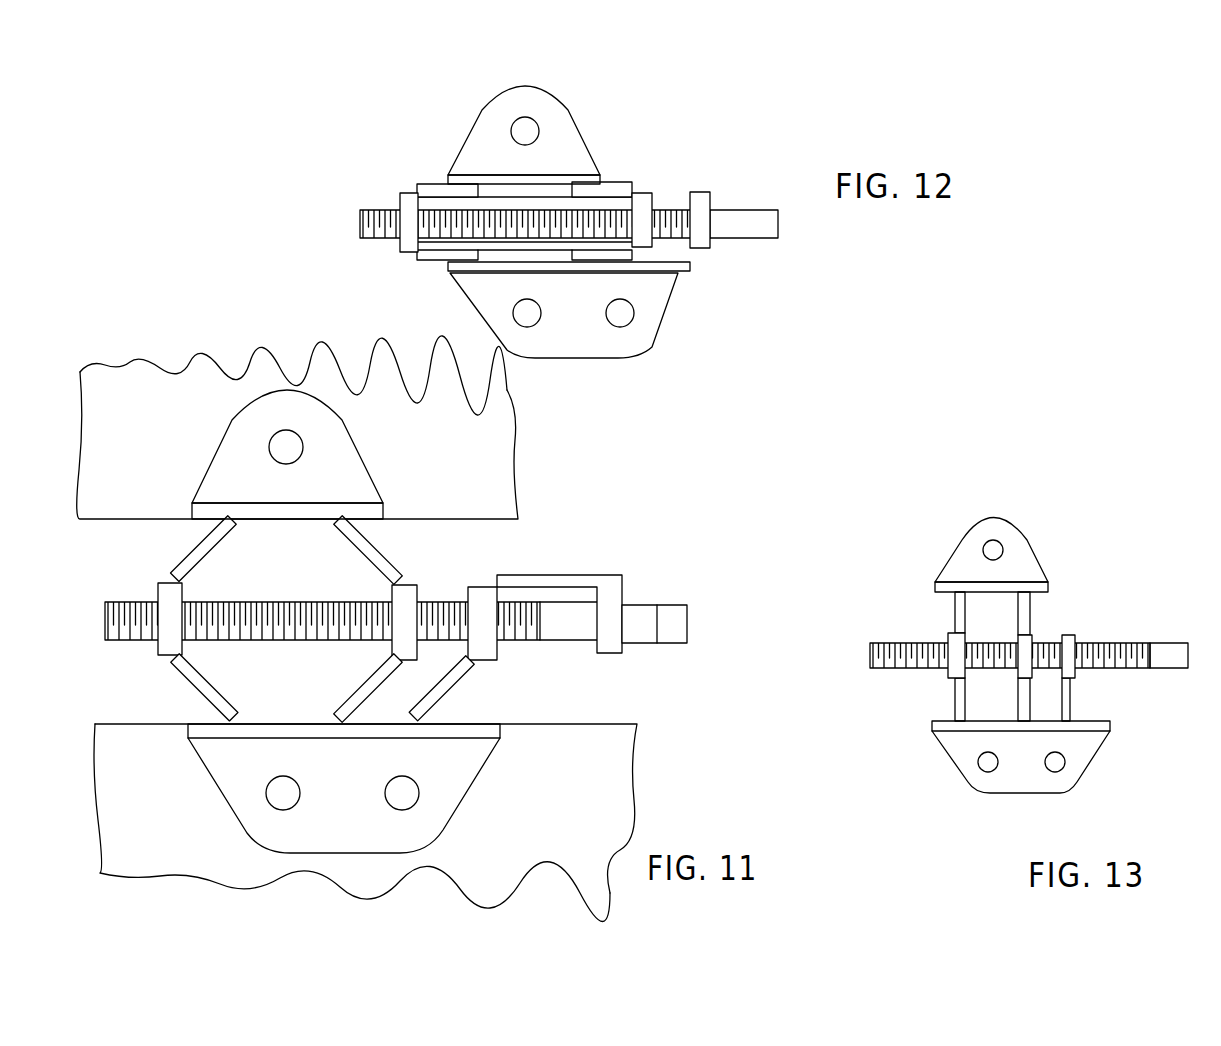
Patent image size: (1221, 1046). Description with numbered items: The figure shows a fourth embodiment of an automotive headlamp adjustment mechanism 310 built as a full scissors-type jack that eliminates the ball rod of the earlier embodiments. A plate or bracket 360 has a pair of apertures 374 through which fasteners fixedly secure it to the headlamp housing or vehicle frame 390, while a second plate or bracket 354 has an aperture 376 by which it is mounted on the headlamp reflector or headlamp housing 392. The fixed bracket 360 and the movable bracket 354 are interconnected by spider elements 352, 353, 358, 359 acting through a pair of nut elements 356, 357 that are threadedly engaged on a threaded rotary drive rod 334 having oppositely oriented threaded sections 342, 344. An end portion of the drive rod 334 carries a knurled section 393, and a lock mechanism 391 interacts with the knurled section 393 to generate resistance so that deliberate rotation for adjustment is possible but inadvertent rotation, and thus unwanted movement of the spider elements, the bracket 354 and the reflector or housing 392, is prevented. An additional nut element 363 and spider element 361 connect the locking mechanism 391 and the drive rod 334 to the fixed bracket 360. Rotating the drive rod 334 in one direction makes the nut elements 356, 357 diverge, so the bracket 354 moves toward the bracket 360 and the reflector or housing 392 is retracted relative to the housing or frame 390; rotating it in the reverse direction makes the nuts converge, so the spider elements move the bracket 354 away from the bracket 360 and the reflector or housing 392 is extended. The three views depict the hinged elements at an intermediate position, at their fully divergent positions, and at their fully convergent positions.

In FIG. 12, the headlamp adjustment mechanism 310 is at (721, 163).
In FIG. 11, the headlamp adjustment mechanism 310 is at (588, 530).
In FIG. 12, the threaded rotary drive rod 334 is at (535, 224).
In FIG. 11, the threaded rotary drive rod 334 is at (440, 608).
In FIG. 13, the threaded rotary drive rod 334 is at (1110, 650).
In FIG. 11, the threaded section 342 is at (232, 638).
In FIG. 11, the threaded section 344 is at (335, 633).
In FIG. 12, the spider element 352 is at (437, 190).
In FIG. 11, the spider element 352 is at (197, 553).
In FIG. 13, the spider element 352 is at (958, 615).
In FIG. 12, the spider element 353 is at (613, 185).
In FIG. 11, the spider element 353 is at (378, 557).
In FIG. 13, the spider element 353 is at (1027, 617).
In FIG. 12, the movable plate or bracket 354 is at (567, 140).
In FIG. 11, the movable plate or bracket 354 is at (342, 463).
In FIG. 13, the movable plate or bracket 354 is at (1013, 533).
In FIG. 12, the nut element 356 is at (652, 195).
In FIG. 11, the nut element 356 is at (392, 597).
In FIG. 13, the nut element 356 is at (1023, 663).
In FIG. 12, the nut element 357 is at (407, 203).
In FIG. 11, the nut element 357 is at (177, 605).
In FIG. 13, the nut element 357 is at (955, 650).
In FIG. 12, the spider element 358 is at (615, 255).
In FIG. 11, the spider element 358 is at (353, 697).
In FIG. 13, the spider element 358 is at (1025, 703).
In FIG. 12, the spider element 359 is at (432, 255).
In FIG. 11, the spider element 359 is at (192, 682).
In FIG. 13, the spider element 359 is at (958, 700).
In FIG. 12, the fixed plate or bracket 360 is at (650, 320).
In FIG. 11, the fixed plate or bracket 360 is at (463, 772).
In FIG. 13, the fixed plate or bracket 360 is at (1072, 773).
In FIG. 12, the spider element 361 is at (685, 257).
In FIG. 11, the spider element 361 is at (453, 687).
In FIG. 13, the spider element 361 is at (1068, 700).
In FIG. 12, the additional nut element 363 is at (703, 207).
In FIG. 11, the additional nut element 363 is at (483, 630).
In FIG. 13, the additional nut element 363 is at (1065, 640).
In FIG. 12, the apertures 374 is at (535, 320).
In FIG. 11, the apertures 374 is at (290, 805).
In FIG. 13, the apertures 374 is at (990, 765).
In FIG. 12, the aperture 376 is at (525, 117).
In FIG. 11, the aperture 376 is at (287, 437).
In FIG. 13, the aperture 376 is at (993, 540).
In FIG. 11, the headlamp housing or vehicle frame 390 is at (170, 811).
In FIG. 11, the lock mechanism 391 is at (618, 587).
In FIG. 11, the headlamp reflector or headlamp housing 392 is at (175, 421).
In FIG. 12, the knurled section 393 is at (765, 227).
In FIG. 11, the knurled section 393 is at (637, 638).